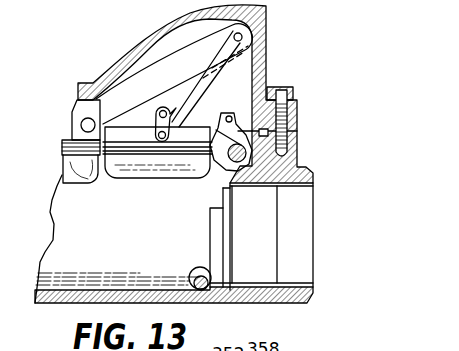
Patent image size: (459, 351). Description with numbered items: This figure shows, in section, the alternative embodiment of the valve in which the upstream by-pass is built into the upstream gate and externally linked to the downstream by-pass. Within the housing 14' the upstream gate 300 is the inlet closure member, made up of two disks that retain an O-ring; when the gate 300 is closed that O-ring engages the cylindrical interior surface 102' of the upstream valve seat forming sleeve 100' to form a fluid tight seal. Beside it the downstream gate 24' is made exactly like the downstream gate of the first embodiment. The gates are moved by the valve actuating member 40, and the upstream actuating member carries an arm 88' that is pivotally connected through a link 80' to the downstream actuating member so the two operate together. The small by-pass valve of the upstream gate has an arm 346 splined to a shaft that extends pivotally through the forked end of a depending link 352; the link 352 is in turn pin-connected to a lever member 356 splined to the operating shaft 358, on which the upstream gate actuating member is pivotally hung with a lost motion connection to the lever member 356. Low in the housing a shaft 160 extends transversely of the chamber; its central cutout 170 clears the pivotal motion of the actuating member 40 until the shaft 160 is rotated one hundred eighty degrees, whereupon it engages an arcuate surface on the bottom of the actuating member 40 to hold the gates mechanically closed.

The valve body 14' is at (189, 154).
The downstream gate 24' is at (81, 148).
The valve actuating member 40 is at (207, 158).
The link 80' is at (174, 74).
The arm 88' is at (210, 79).
The upstream valve seat forming sleeve 100' is at (254, 233).
The cylindrical interior surface 102' is at (241, 237).
The shaft 160 is at (189, 278).
The central cutout 170 is at (200, 267).
The upstream gate 300 is at (151, 182).
The arm 346 is at (154, 127).
The link 352 is at (177, 109).
The lever member 356 is at (213, 131).
The operating shaft 358 is at (222, 167).